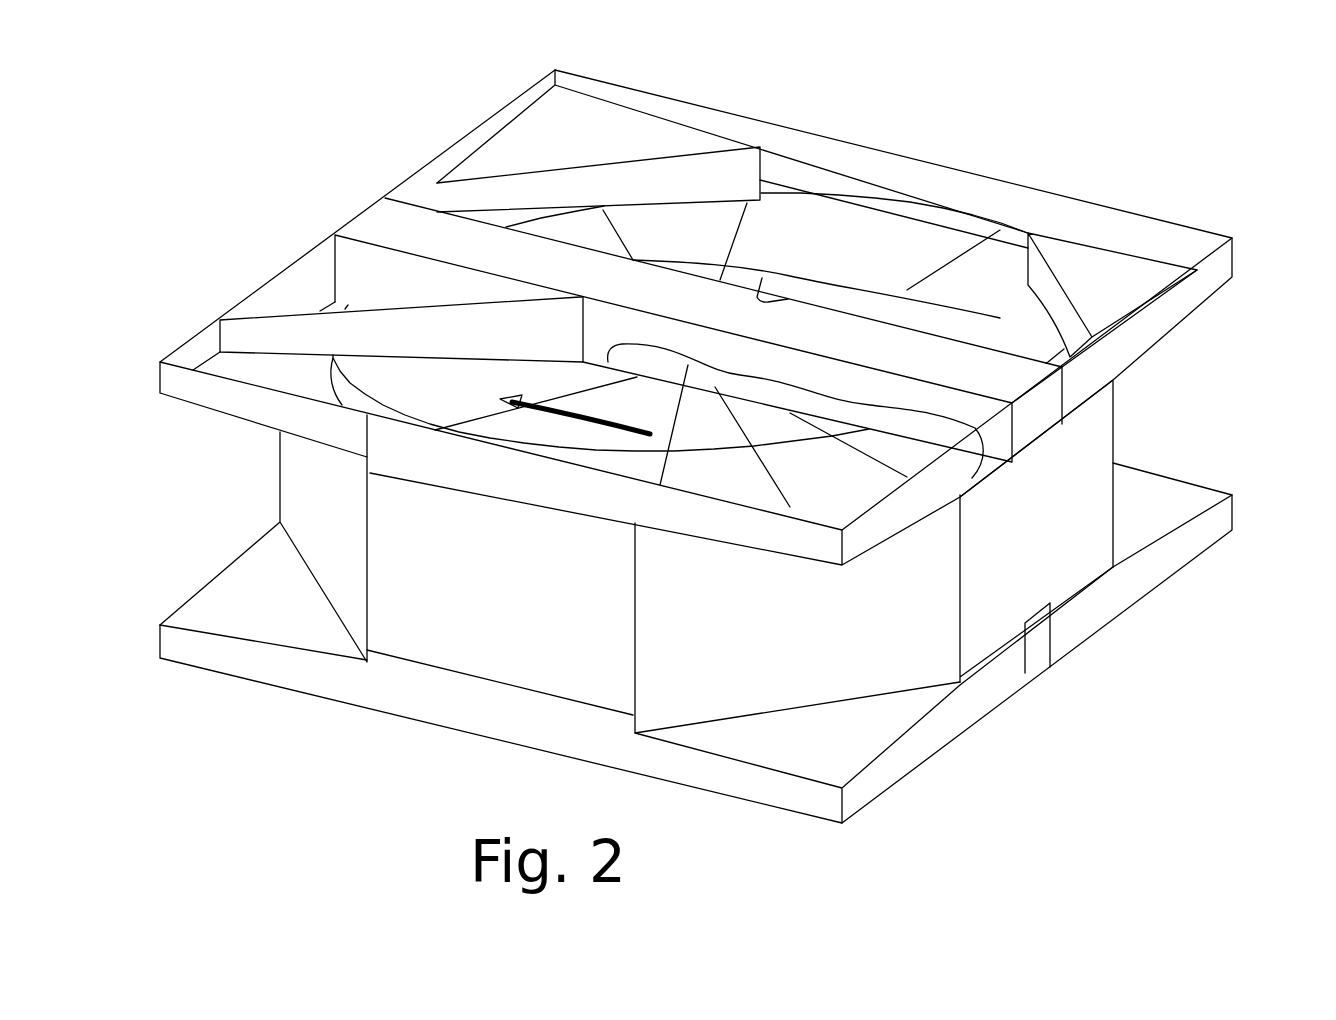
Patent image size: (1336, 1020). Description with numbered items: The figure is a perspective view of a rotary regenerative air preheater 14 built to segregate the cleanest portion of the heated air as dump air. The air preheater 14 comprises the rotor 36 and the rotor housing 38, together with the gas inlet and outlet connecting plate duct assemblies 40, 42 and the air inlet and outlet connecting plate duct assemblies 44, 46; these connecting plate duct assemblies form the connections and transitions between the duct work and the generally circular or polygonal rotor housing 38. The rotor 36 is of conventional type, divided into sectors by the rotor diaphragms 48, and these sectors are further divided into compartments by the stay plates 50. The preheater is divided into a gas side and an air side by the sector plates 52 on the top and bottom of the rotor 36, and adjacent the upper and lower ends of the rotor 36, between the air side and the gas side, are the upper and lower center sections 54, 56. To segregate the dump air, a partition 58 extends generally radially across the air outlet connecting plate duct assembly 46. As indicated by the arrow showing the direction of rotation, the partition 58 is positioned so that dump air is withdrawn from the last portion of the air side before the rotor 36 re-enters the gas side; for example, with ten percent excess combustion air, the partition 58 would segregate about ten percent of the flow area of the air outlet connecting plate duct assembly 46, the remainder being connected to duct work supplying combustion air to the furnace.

The air preheater 14 is at (1196, 110).
The rotor 36 is at (807, 237).
The rotor housing 38 is at (1100, 462).
The gas inlet connecting plate duct assembly 40 is at (787, 137).
The gas outlet connecting plate duct assembly 42 is at (1128, 578).
The air inlet connecting plate duct assembly 44 is at (923, 743).
The air outlet connecting plate duct assembly 46 is at (243, 408).
The rotor diaphragms 48 is at (770, 292).
The stay plates 50 is at (1083, 215).
The sector plates 52 is at (963, 440).
The upper center section 54 is at (373, 235).
The lower center section 56 is at (1037, 645).
The partition 58 is at (268, 340).